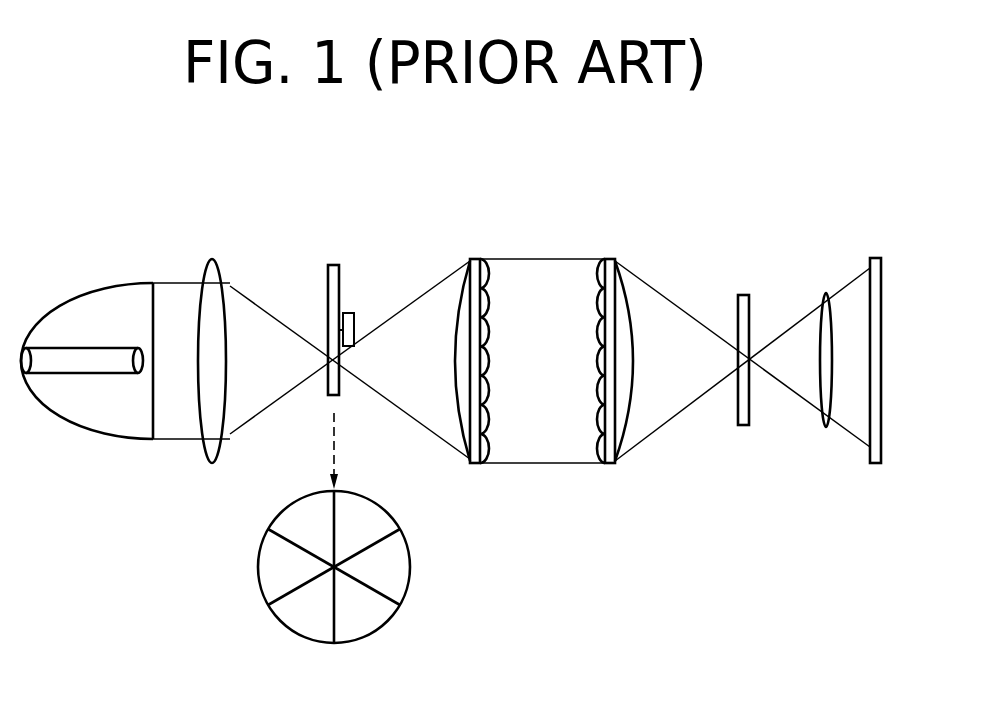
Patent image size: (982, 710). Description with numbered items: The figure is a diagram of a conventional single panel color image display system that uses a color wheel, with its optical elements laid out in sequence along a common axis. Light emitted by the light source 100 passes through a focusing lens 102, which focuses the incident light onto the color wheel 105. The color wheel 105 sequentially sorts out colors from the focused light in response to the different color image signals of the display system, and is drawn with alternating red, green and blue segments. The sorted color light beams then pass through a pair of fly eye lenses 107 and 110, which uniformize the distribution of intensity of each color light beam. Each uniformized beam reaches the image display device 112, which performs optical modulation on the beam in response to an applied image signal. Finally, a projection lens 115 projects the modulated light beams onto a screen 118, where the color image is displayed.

The light source 100 is at (112, 283).
The focusing lens 102 is at (212, 258).
The color wheel 105 is at (335, 265).
The fly eye lens 107 is at (474, 259).
The fly eye lens 110 is at (610, 259).
The image display device 112 is at (744, 295).
The projection lens 115 is at (826, 293).
The screen 118 is at (875, 258).